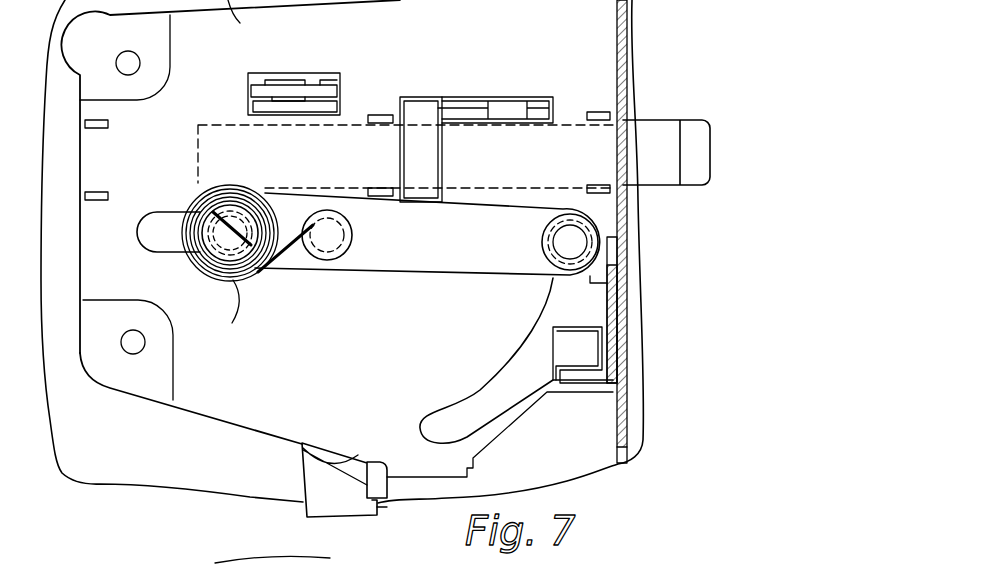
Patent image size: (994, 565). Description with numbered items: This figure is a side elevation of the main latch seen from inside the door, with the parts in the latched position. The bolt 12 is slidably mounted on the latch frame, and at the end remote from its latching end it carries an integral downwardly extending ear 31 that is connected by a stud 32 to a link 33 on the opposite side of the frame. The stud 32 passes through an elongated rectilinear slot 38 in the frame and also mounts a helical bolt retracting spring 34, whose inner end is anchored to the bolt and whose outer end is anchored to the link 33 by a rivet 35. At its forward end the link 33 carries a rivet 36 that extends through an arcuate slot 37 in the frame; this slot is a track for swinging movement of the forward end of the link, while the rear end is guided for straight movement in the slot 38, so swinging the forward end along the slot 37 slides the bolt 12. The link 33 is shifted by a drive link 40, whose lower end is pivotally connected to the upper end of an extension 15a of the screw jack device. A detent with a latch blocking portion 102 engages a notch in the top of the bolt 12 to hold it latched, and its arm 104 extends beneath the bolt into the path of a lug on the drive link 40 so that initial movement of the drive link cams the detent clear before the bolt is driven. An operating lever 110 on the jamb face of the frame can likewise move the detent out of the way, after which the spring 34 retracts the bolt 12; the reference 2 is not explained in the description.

The housing 2 is at (137, 470).
The bolt 12 is at (667, 143).
The extension of the screw jack device 15a is at (385, 508).
The ear 31 is at (200, 214).
The stud 32 is at (227, 243).
The link 33 is at (414, 266).
The helical bolt retracting spring 34 is at (242, 313).
The rivet 35 is at (327, 242).
The rivet 36 is at (568, 246).
The arcuate slot 37 is at (543, 318).
The elongated rectilinear slot 38 is at (158, 243).
The drive link 40 is at (342, 470).
The latch blocking portion 102 is at (515, 113).
The detent arm 104 is at (413, 157).
The operating lever 110 is at (607, 287).